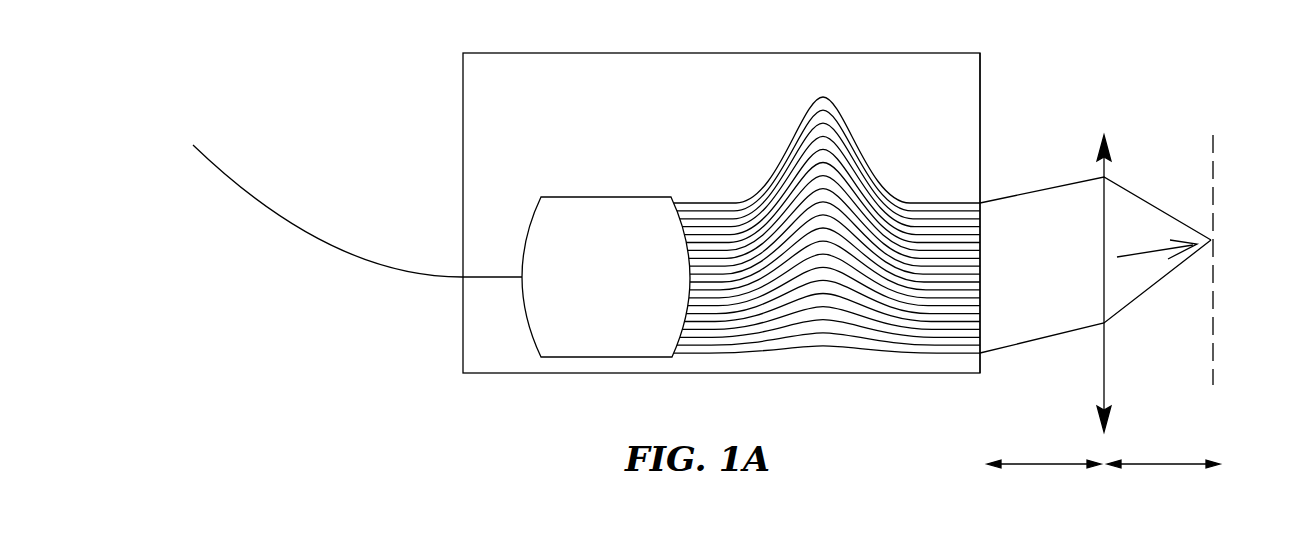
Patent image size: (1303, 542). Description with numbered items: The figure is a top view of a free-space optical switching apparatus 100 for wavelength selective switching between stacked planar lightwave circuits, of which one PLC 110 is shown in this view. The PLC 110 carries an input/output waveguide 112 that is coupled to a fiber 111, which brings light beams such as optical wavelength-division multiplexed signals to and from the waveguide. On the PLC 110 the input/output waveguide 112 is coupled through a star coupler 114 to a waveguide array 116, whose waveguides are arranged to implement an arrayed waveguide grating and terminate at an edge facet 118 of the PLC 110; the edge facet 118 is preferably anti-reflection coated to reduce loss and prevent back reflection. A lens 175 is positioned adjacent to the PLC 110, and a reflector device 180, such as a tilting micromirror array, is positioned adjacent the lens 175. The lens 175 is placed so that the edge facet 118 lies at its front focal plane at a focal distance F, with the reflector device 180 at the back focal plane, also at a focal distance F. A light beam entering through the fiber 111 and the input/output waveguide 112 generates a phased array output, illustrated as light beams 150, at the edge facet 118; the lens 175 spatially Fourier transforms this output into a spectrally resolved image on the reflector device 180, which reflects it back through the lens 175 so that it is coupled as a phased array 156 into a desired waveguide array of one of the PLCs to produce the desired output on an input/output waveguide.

The free-space optical switching apparatus 100 is at (381, 58).
The PLC 110 is at (721, 213).
The fiber 111 is at (228, 183).
The input/output waveguide 112 is at (493, 277).
The star coupler 114 is at (611, 197).
The waveguide array 116 is at (946, 115).
The edge facet 118 is at (981, 101).
The light beams 150 is at (1040, 334).
The phased array 156 is at (1044, 197).
The lens 175 is at (1112, 148).
The reflector device 180 is at (1214, 163).